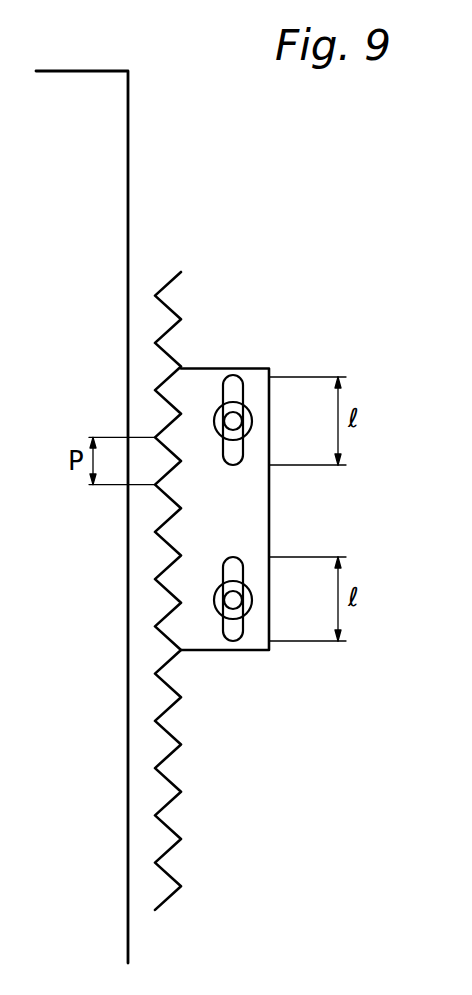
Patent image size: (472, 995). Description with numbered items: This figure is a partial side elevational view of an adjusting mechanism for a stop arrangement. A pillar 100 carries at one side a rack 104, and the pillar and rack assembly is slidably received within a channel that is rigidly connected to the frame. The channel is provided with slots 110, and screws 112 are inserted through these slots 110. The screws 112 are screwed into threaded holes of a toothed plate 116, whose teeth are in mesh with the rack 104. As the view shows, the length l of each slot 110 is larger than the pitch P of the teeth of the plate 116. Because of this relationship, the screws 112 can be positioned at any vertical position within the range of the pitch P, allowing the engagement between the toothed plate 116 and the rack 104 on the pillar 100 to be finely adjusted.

The pillar 100 is at (122, 194).
The rack 104 is at (141, 796).
The slot 110 is at (232, 376).
The screw 112 is at (246, 421).
The toothed plate 116 is at (207, 651).